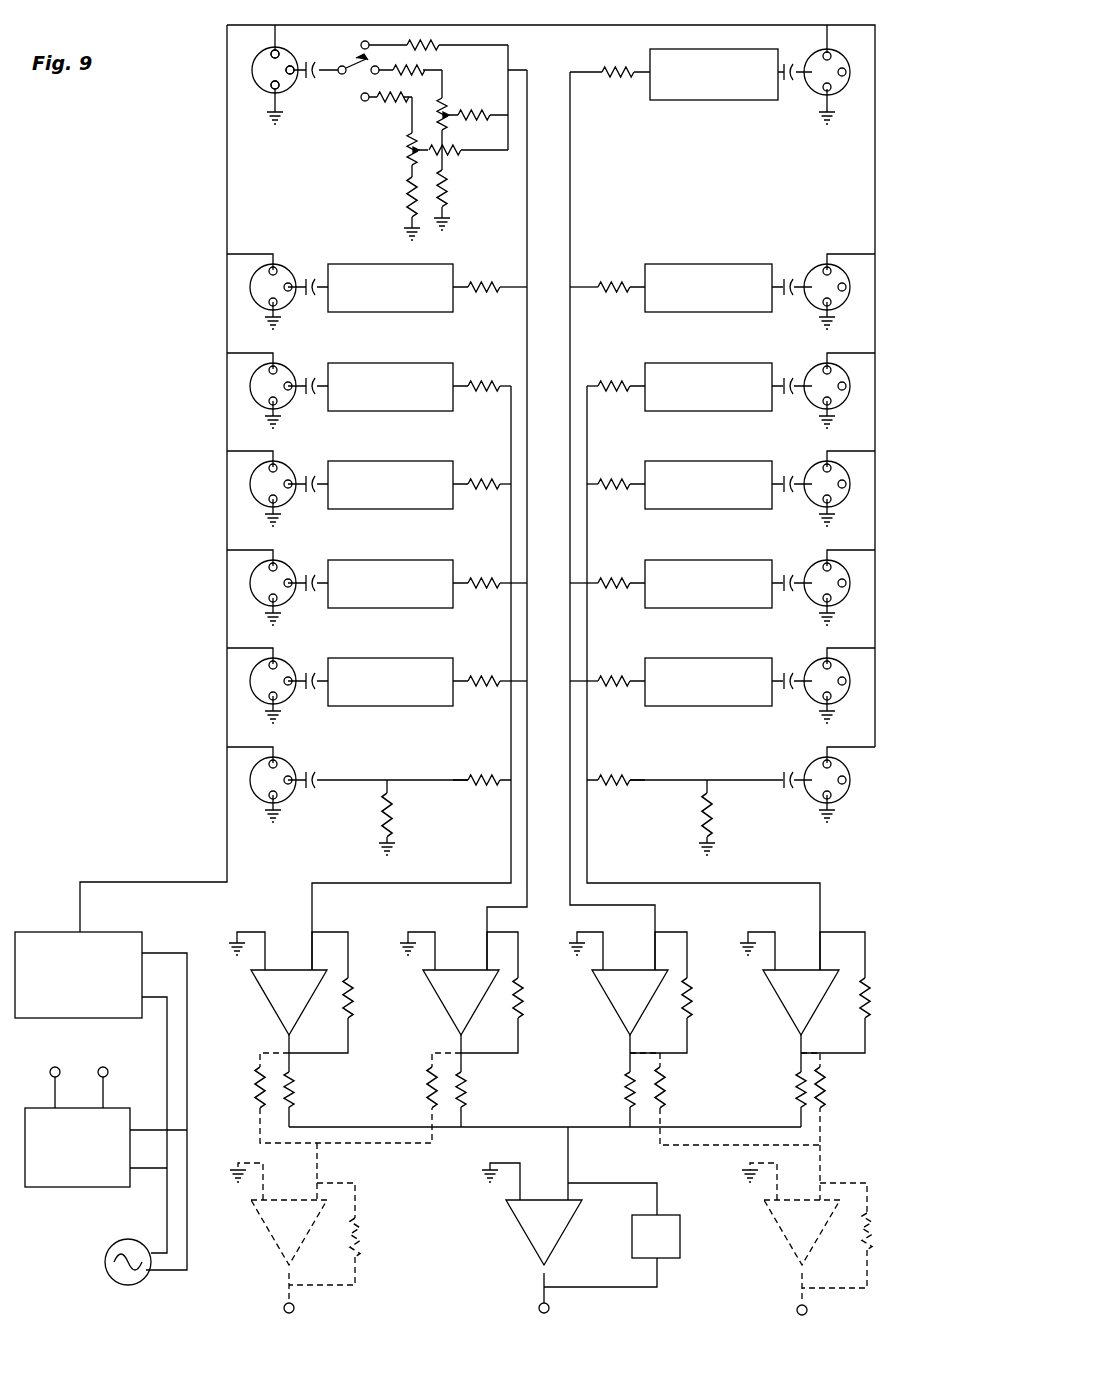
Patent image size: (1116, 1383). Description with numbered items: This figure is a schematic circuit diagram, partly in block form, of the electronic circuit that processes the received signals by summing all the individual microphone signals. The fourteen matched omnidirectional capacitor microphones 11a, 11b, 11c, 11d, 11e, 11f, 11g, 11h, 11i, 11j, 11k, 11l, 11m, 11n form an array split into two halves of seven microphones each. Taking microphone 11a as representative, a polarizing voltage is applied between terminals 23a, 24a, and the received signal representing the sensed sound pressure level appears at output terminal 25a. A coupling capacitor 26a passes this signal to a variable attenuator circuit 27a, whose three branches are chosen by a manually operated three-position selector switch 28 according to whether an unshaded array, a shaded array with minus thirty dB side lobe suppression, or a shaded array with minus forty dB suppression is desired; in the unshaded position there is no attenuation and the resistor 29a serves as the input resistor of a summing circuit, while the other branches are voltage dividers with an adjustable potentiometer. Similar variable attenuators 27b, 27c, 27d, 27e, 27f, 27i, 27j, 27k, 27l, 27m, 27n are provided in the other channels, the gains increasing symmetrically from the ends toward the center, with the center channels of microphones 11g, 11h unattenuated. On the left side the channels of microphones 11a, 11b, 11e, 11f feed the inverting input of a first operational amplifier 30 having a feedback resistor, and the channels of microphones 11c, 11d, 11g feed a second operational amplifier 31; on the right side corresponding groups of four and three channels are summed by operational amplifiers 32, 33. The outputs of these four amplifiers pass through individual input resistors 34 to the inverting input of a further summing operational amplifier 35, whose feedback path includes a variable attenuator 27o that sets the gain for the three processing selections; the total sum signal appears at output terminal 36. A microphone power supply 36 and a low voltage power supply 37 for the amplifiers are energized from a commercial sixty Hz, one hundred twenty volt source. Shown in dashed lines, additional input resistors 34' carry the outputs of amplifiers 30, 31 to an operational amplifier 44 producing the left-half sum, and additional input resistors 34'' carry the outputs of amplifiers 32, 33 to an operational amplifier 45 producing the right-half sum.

The microphone 11a is at (286, 58).
The microphone 11b is at (286, 270).
The microphone 11c is at (286, 369).
The microphone 11d is at (286, 467).
The microphone 11e is at (286, 566).
The microphone 11f is at (286, 664).
The microphone 11g is at (286, 763).
The microphone 11h is at (812, 763).
The microphone 11i is at (812, 664).
The microphone 11j is at (812, 566).
The microphone 11k is at (812, 467).
The microphone 11l is at (812, 369).
The microphone 11m is at (812, 270).
The microphone 11n is at (810, 92).
The terminal 23a is at (270, 92).
The terminal 24a is at (270, 50).
The output terminal 25a is at (292, 75).
The coupling capacitor 26a is at (316, 80).
The variable attenuator circuit 27a is at (393, 148).
The variable attenuator 27b is at (438, 265).
The variable attenuator 27c is at (438, 364).
The variable attenuator 27d is at (438, 462).
The variable attenuator 27e is at (438, 561).
The variable attenuator 27f is at (438, 659).
The variable attenuator 27i is at (656, 660).
The variable attenuator 27j is at (656, 562).
The variable attenuator 27k is at (656, 463).
The variable attenuator 27l is at (656, 365).
The variable attenuator 27m is at (656, 266).
The variable attenuator 27n is at (654, 50).
The variable attenuator 27o is at (680, 1236).
The three-position selector switch 28 is at (362, 100).
The resistor 29a is at (442, 50).
The first operational amplifier 30 is at (459, 970).
The second operational amplifier 31 is at (287, 970).
The operational amplifier 32 is at (626, 970).
The operational amplifier 33 is at (797, 970).
The input resistors 34 is at (545, 1089).
The additional input resistors 34' is at (339, 1126).
The additional input resistors 34'' is at (751, 1126).
The operational amplifier 35 is at (549, 1200).
The microphone power supply 36 is at (48, 936).
The low voltage power supply 37 is at (42, 1108).
The operational amplifier 44 is at (287, 1204).
The operational amplifier 45 is at (798, 1204).